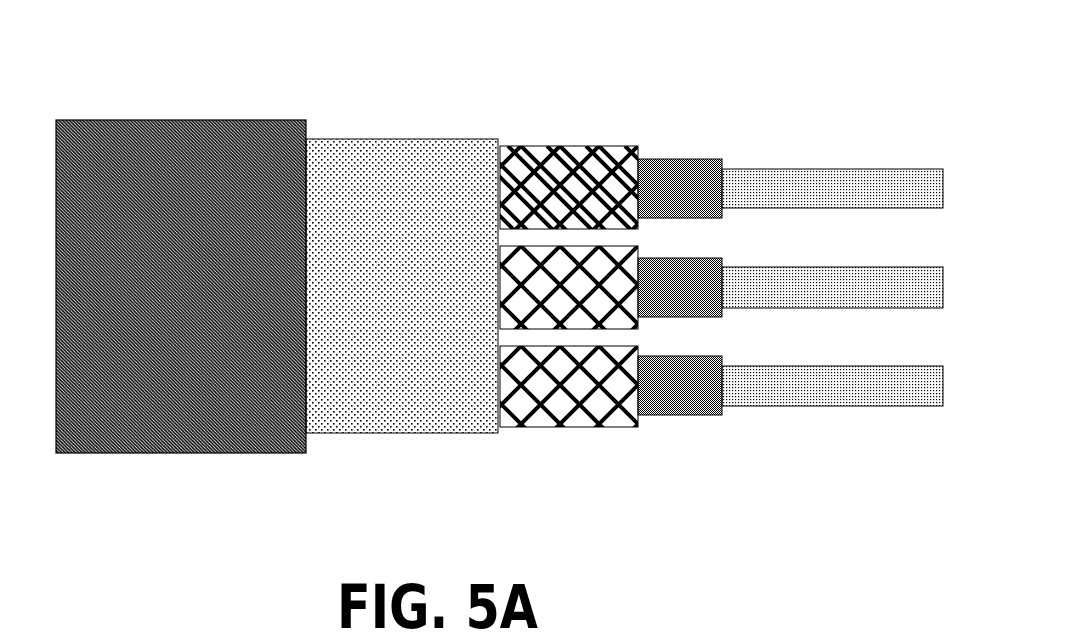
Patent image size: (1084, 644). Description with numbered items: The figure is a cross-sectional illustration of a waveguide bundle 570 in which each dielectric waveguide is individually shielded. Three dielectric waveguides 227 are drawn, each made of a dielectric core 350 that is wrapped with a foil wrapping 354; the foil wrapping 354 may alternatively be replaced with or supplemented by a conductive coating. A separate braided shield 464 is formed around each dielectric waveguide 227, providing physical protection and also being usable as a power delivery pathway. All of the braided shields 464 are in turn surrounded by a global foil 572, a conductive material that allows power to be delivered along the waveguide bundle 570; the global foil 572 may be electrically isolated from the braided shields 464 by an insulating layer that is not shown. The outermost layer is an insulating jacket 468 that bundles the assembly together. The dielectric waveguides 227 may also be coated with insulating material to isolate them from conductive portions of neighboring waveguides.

The waveguide bundle 570 is at (167, 78).
The insulating jacket 468 is at (140, 454).
The global foil 572 is at (370, 433).
The braided shield 464 is at (563, 426).
The dielectric waveguide 227 is at (781, 269).
The foil wrapping 354 is at (680, 415).
The dielectric core 350 is at (820, 406).